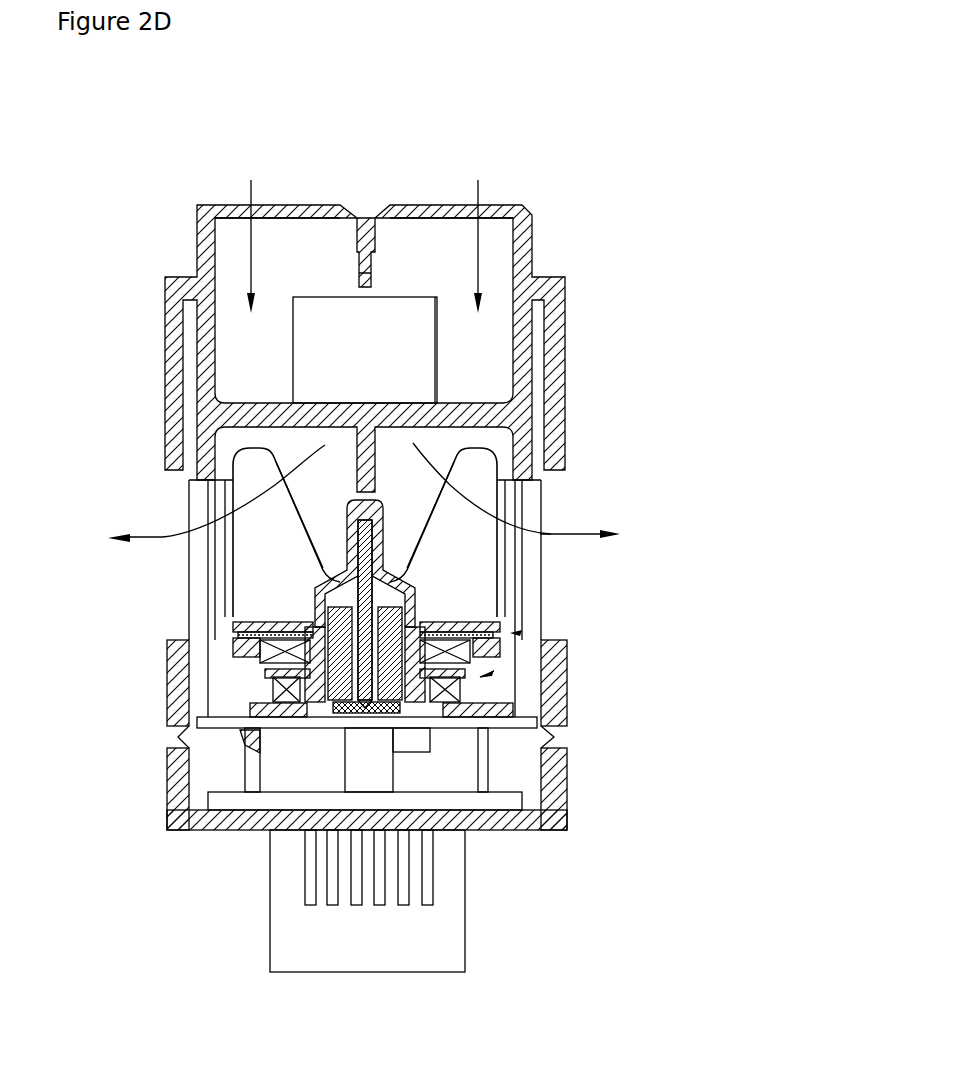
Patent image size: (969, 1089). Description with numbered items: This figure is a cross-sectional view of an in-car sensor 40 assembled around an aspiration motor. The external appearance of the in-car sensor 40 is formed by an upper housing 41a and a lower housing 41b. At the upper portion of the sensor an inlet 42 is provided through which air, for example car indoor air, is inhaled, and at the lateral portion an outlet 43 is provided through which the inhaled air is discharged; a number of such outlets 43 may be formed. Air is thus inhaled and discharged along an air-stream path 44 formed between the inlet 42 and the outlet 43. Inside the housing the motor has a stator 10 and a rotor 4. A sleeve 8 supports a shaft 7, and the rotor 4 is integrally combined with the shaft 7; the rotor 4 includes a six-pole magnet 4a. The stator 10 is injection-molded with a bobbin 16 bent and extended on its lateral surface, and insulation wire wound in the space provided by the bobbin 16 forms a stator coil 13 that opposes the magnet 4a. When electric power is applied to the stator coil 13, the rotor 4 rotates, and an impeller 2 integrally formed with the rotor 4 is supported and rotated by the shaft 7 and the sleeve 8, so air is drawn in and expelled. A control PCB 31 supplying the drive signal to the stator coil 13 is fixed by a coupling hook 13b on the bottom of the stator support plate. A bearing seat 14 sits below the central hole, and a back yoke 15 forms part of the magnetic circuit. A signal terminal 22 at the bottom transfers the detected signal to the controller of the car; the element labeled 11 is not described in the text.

The in-car sensor 40 is at (391, 526).
The upper housing 41a is at (562, 364).
The lower housing 41b is at (567, 744).
The inlet 42 is at (408, 227).
The outlet 43 is at (197, 507).
The air-stream path 44 is at (551, 534).
The impeller 11 is at (345, 478).
The impeller 2 is at (490, 552).
The shaft 7 is at (385, 554).
The rotor 4 is at (510, 633).
The magnet 4a is at (470, 645).
The sleeve 8 is at (300, 663).
The stator 10 is at (482, 677).
The stator coil 13 is at (450, 706).
The coupling hook 13b is at (253, 737).
The control PCB 31 is at (275, 727).
The bearing seat 14 is at (345, 705).
The back yoke 15 is at (407, 717).
The bobbin 16 is at (427, 720).
The signal terminal 22 is at (303, 893).